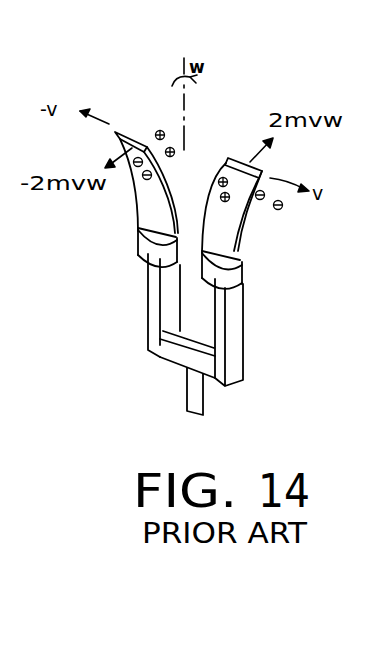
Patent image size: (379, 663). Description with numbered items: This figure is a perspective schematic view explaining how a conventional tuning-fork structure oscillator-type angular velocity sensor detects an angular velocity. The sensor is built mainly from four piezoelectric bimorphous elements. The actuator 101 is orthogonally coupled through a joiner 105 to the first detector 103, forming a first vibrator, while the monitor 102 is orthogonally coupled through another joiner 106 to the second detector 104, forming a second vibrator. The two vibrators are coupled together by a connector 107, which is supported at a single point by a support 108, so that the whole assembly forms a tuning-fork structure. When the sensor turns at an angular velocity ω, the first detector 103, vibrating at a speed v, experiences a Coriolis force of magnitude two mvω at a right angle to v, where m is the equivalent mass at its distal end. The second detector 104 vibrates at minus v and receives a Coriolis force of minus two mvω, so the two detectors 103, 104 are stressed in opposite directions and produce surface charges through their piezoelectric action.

The actuator 101 is at (243, 338).
The monitor 102 is at (150, 330).
The first detector 103 is at (228, 242).
The second detector 104 is at (152, 212).
The joiner 105 is at (241, 271).
The joiner 106 is at (140, 253).
The connector 107 is at (175, 357).
The support 108 is at (204, 392).